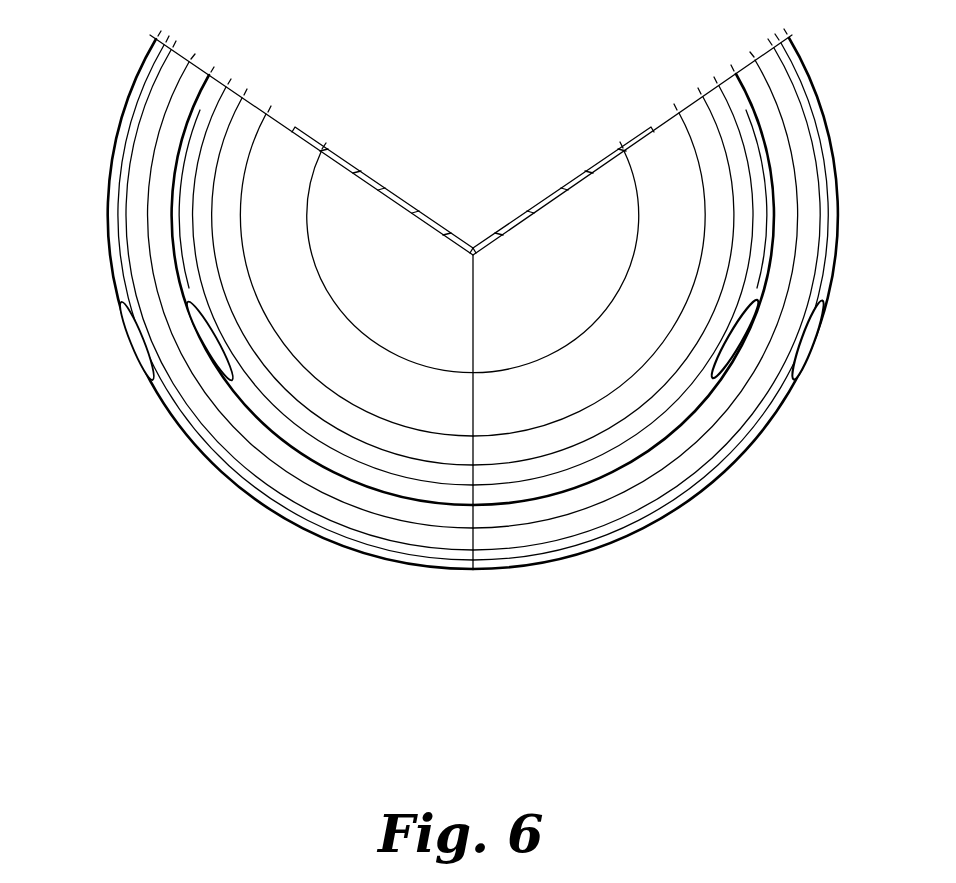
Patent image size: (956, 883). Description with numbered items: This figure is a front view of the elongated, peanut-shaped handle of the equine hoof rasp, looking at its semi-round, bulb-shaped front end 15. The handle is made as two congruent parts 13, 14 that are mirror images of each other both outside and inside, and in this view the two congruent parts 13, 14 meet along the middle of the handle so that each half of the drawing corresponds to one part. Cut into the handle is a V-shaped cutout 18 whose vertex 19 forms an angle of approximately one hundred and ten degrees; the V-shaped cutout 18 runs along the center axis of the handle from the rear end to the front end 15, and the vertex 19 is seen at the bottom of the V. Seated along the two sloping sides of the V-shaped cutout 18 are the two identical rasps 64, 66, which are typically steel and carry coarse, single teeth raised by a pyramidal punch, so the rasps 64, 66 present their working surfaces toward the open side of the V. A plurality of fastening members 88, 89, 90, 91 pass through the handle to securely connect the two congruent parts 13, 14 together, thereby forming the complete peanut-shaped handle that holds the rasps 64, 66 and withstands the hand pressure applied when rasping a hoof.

The congruent part 13 is at (760, 432).
The congruent part 14 is at (186, 432).
The front end 15 is at (570, 372).
The V-shaped cutout 18 is at (482, 184).
The vertex 19 is at (473, 247).
The rasp 64 is at (607, 145).
The rasp 66 is at (340, 158).
The fastening member 88 is at (132, 342).
The fastening member 89 is at (822, 342).
The fastening member 90 is at (210, 353).
The fastening member 91 is at (740, 348).